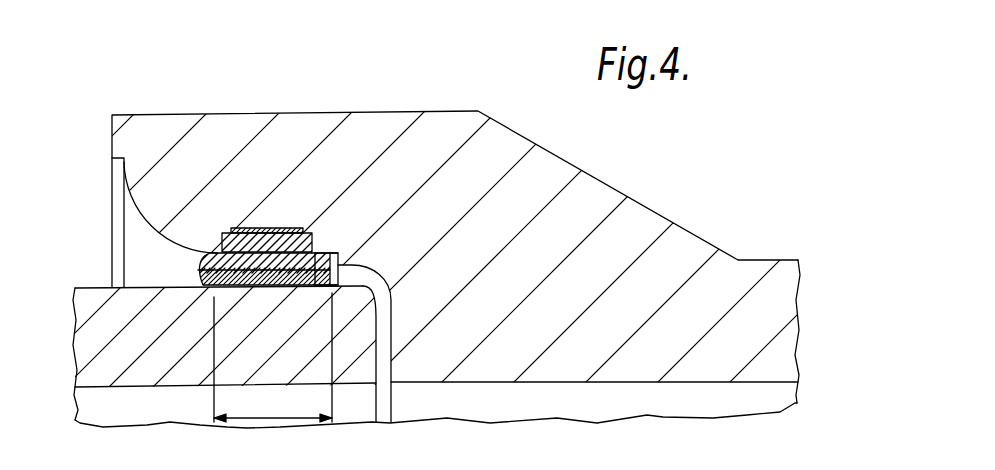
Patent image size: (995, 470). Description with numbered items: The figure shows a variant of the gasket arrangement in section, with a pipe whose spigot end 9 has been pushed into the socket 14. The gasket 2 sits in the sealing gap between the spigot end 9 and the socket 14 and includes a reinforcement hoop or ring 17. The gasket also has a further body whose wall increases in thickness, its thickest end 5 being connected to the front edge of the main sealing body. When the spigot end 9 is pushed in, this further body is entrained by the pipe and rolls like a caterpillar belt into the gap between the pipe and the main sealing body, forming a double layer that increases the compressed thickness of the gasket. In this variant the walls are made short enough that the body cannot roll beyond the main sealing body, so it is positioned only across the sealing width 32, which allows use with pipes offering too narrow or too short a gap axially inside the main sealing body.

The socket 14 is at (235, 128).
The reinforcement hoop or ring 17 is at (294, 228).
The gasket 2 is at (247, 233).
The thickest end 5 is at (200, 262).
The spigot end 9 is at (90, 341).
The sealing width 32 is at (273, 359).